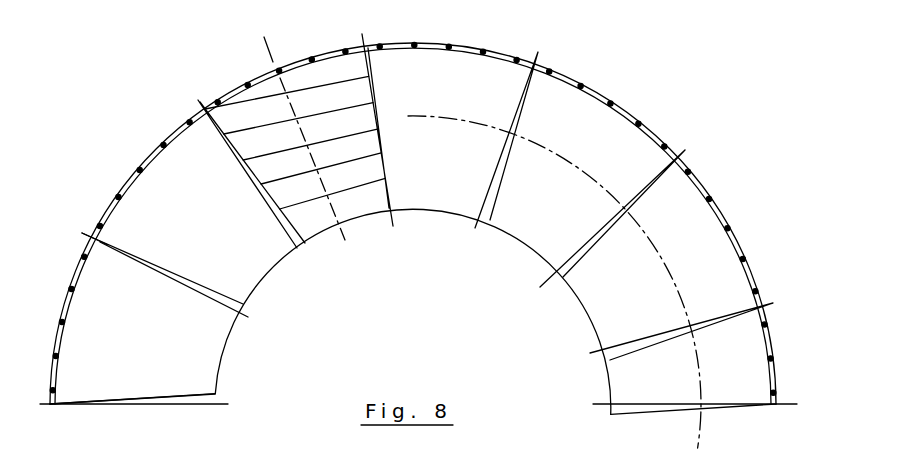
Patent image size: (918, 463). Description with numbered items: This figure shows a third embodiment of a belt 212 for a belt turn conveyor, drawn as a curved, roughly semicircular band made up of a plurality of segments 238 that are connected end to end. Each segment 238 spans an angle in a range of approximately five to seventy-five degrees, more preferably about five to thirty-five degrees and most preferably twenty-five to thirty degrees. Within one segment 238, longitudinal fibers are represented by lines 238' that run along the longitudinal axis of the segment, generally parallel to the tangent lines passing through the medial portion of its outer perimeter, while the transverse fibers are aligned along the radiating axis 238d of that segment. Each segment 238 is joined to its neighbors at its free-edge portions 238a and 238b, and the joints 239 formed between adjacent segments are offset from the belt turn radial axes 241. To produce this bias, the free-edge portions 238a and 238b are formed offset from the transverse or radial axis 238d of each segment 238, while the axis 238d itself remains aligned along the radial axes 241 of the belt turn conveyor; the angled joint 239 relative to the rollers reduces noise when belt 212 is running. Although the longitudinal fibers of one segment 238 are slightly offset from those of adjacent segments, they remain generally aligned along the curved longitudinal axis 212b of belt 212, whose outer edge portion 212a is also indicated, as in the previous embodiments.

The belt 212 is at (616, 97).
The outer band segment 212a is at (722, 210).
The curved longitudinal axis 212b is at (700, 441).
The segment 238 is at (413, 296).
The longitudinal fibers 238' is at (295, 127).
The free-edge portion 238a is at (197, 283).
The free-edge portion 238b is at (158, 267).
The radiating axis 238d is at (268, 49).
The joint 239 is at (108, 247).
The belt turn radial axis 241 is at (546, 279).